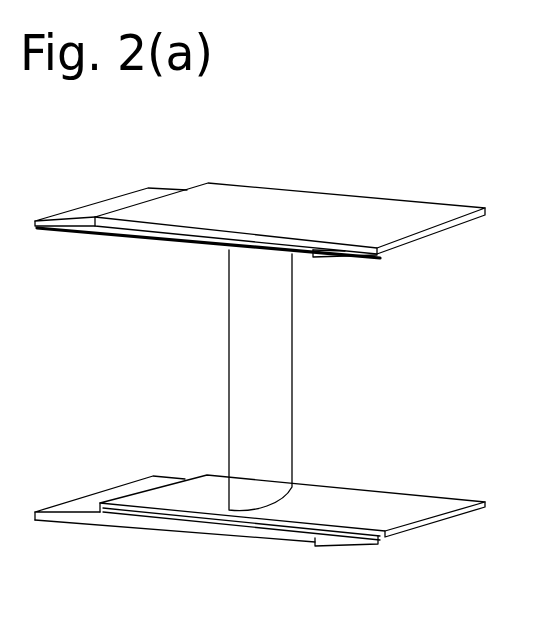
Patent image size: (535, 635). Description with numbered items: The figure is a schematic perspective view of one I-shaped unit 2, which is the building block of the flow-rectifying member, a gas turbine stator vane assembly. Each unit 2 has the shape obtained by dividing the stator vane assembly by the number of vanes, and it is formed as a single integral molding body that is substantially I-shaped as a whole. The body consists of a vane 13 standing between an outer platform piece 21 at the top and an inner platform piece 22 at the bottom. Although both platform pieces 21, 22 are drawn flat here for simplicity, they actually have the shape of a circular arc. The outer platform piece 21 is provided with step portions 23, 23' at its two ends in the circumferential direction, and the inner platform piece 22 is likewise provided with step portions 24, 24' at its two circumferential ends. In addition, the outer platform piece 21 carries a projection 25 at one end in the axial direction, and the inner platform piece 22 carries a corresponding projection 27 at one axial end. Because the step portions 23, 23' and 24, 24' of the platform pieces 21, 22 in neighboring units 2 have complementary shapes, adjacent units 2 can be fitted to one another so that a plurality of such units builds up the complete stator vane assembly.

The I-shaped unit 2 is at (399, 150).
The vane 13 is at (290, 401).
The outer platform piece 21 is at (276, 193).
The inner platform piece 22 is at (213, 542).
The step portion 23 is at (111, 183).
The step portion 23' is at (354, 285).
The step portion 24 is at (110, 478).
The step portion 24' is at (350, 574).
The projection 25 is at (124, 239).
The projection 27 is at (385, 522).